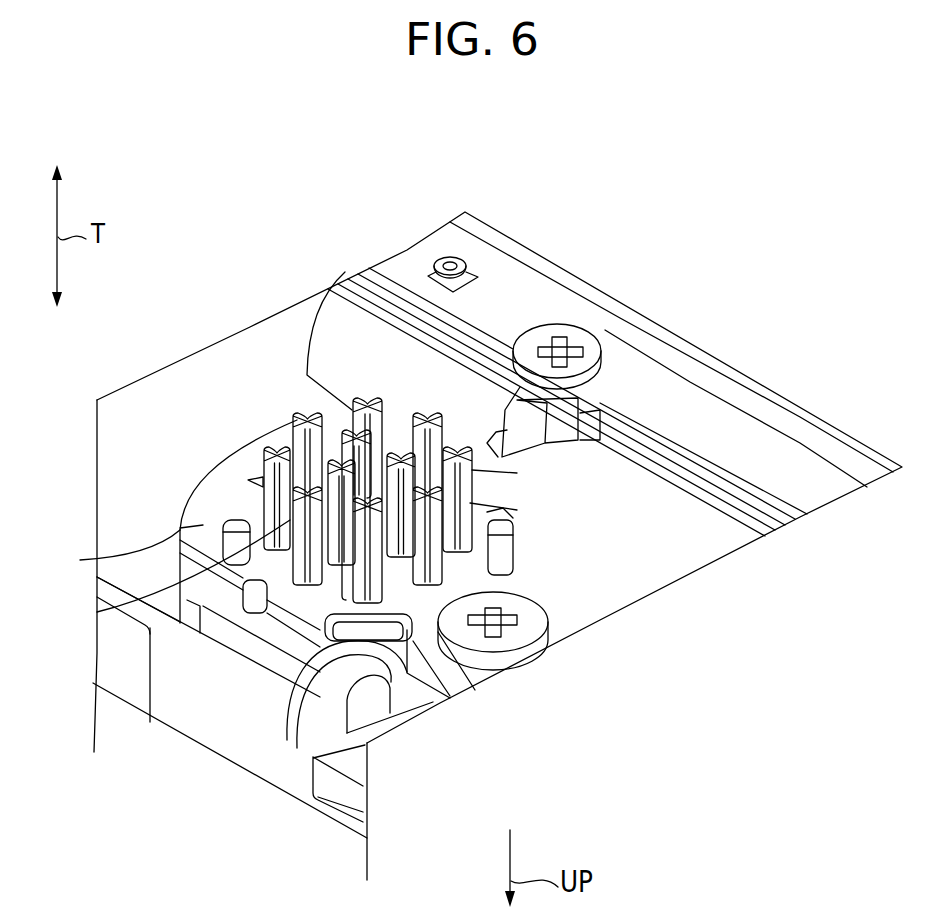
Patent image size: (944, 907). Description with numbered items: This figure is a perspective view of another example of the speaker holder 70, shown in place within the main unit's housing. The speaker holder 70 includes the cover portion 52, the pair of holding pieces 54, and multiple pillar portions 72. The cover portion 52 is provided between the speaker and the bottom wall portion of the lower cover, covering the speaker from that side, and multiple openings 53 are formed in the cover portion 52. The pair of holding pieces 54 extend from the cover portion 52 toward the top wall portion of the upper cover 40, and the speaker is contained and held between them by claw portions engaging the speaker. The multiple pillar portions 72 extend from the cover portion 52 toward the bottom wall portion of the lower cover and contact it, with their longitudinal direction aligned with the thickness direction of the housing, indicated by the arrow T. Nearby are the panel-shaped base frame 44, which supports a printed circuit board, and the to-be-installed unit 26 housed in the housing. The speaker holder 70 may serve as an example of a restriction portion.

The to-be-installed unit 26 is at (633, 377).
The upper cover 40 is at (258, 784).
The base frame 44 is at (663, 568).
The cover portion 52 is at (97, 562).
The openings 53 is at (100, 617).
The holding pieces 54 is at (148, 702).
The speaker holder 70 is at (185, 501).
The pillar portions 72 is at (295, 410).